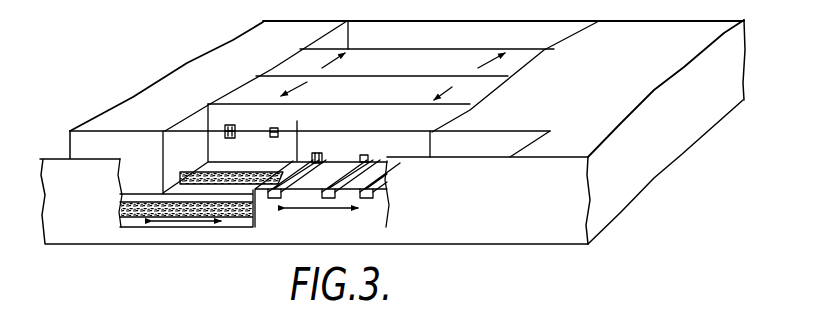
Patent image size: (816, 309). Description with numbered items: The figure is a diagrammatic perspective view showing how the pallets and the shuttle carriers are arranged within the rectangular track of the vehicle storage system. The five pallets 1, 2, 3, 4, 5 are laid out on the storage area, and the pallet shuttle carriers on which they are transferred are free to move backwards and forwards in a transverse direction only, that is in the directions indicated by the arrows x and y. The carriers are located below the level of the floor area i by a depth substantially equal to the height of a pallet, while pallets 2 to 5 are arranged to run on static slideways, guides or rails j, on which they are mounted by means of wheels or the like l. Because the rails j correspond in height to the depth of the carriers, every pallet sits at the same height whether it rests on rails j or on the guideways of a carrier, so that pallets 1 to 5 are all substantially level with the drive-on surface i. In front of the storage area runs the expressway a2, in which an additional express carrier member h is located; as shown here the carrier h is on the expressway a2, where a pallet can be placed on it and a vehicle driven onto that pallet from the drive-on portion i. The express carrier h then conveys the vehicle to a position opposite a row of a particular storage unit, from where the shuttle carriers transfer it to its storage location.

The pallet 1 is at (347, 63).
The pallet 2 is at (472, 61).
The pallet 3 is at (426, 91).
The pallet 4 is at (333, 149).
The pallet 5 is at (305, 91).
The floor area (drive-on surface) i is at (622, 108).
The static slideways, guides or rails j is at (225, 137).
The wheels l is at (250, 112).
The express carrier member h is at (375, 207).
The expressway a2 is at (140, 222).
The transverse direction of movement x is at (483, 33).
The transverse direction of movement y is at (413, 117).